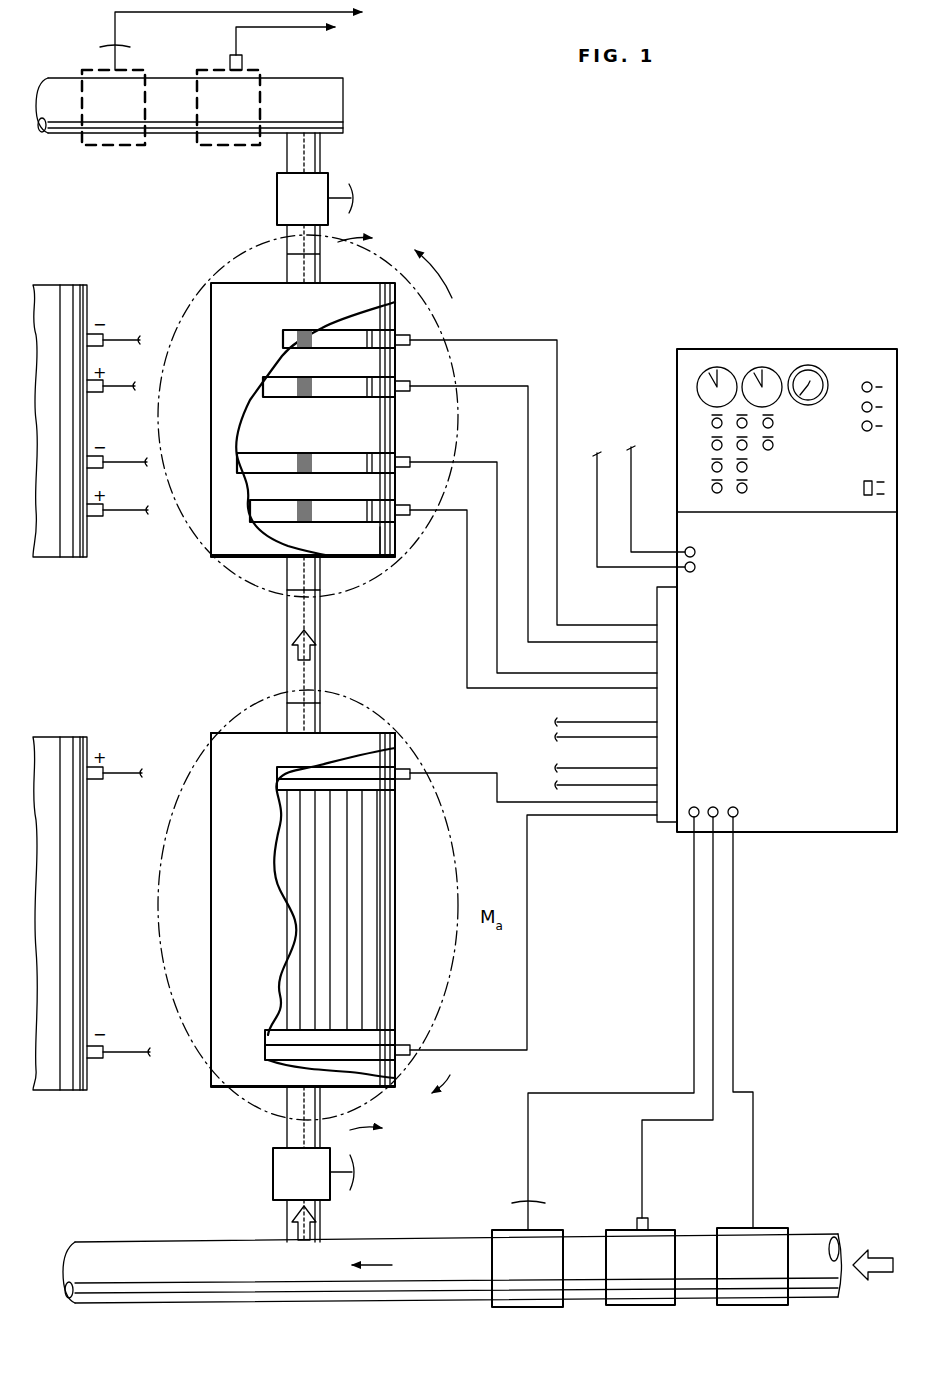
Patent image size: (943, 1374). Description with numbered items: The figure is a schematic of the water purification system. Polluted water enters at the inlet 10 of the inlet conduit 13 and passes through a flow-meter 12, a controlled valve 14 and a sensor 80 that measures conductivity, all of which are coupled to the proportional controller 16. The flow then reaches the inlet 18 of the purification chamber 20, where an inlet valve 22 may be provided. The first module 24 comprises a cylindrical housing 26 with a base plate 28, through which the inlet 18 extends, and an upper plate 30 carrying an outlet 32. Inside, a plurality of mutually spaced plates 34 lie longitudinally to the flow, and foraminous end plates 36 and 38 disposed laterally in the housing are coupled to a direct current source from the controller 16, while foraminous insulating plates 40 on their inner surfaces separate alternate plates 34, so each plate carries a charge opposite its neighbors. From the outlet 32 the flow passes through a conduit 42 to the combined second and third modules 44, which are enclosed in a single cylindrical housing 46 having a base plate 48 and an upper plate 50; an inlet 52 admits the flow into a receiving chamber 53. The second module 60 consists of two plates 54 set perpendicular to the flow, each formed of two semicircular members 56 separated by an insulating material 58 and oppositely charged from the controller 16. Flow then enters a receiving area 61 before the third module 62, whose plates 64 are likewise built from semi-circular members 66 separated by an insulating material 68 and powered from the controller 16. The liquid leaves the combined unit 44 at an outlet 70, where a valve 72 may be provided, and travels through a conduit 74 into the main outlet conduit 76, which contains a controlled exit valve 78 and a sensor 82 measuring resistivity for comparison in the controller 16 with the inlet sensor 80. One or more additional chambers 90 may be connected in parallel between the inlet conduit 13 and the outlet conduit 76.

The inlet 10 is at (880, 1215).
The flow-meter 12 is at (808, 1236).
The inlet conduit 13 is at (696, 1234).
The controlled valve 14 is at (543, 1235).
The proportional controller 16 is at (793, 601).
The inlet 18 is at (321, 1104).
The purification chamber 20 is at (445, 688).
The inlet valve 22 is at (280, 1175).
The first module 24 is at (400, 1102).
The cylindrical housing 26 is at (211, 885).
The base plate 28 is at (266, 1088).
The upper plate 30 is at (262, 732).
The outlet 32 is at (318, 728).
The plates 34 is at (375, 892).
The foraminous end plate 36 is at (305, 765).
The foraminous end plate 38 is at (382, 1062).
The foraminous insulating plates 40 is at (392, 789).
The conduit 42 is at (320, 664).
The second and third modules 44 is at (395, 267).
The cylindrical housing 46 is at (396, 558).
The base plate 48 is at (365, 558).
The upper plate 50 is at (266, 282).
The inlet 52 is at (321, 574).
The receiving chamber 53 is at (388, 545).
The plates 54 is at (340, 452).
The semicircular members 56 is at (285, 452).
The insulating material 58 is at (311, 440).
The second module 60 is at (410, 472).
The receiving area 61 is at (262, 410).
The third module 62 is at (408, 340).
The plates 64 is at (358, 326).
The semi-circular members 66 is at (326, 330).
The insulating material 68 is at (306, 378).
The outlet 70 is at (318, 272).
The valve 72 is at (283, 183).
The conduit 74 is at (322, 158).
The main outlet conduit 76 is at (333, 85).
The controlled exit valve 78 is at (134, 72).
The sensor 80 is at (626, 1234).
The sensor 82 is at (256, 72).
The additional chambers 90 is at (70, 648).